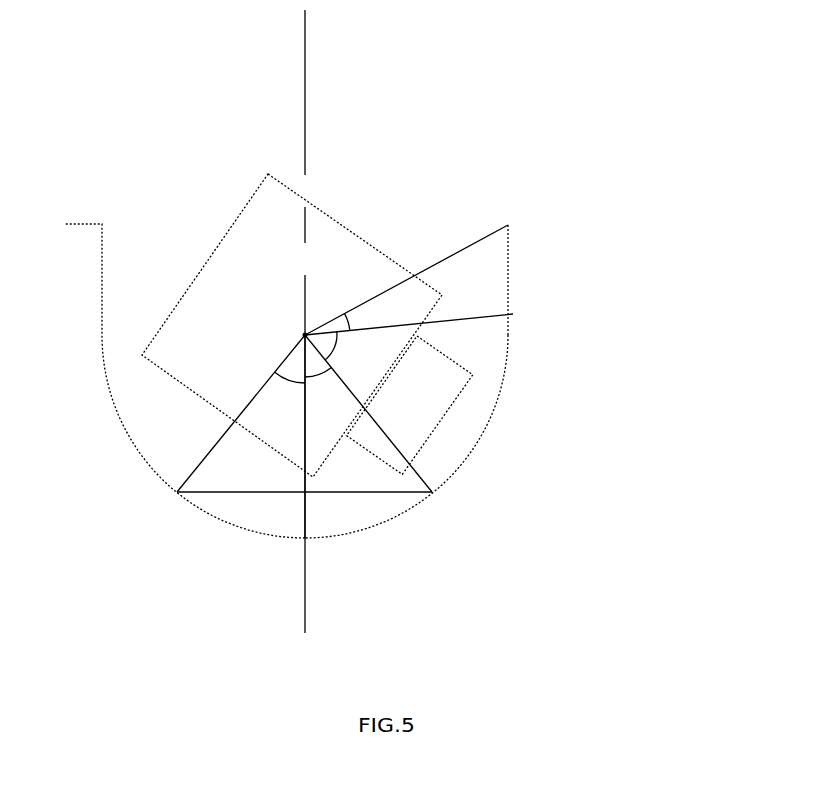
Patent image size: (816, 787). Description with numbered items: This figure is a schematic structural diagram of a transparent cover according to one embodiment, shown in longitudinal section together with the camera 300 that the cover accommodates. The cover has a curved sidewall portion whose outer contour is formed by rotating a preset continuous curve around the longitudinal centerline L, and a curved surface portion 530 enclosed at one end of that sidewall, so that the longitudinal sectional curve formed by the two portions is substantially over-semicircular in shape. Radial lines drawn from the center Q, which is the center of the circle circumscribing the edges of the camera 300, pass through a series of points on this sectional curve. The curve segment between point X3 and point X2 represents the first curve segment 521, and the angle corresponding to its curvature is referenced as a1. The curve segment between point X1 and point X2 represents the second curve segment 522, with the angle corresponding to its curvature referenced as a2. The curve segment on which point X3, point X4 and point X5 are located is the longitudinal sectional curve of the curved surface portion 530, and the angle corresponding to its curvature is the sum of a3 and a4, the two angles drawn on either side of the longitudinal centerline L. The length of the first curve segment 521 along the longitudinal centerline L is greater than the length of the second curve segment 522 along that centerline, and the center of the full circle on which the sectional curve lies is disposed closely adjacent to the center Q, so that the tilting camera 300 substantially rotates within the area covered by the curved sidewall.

The camera 300 is at (360, 237).
The first curve segment 521 is at (510, 268).
The second curve segment 522 is at (497, 400).
The curved surface portion 530 is at (253, 530).
The point X1 is at (508, 225).
The point X2 is at (513, 314).
The point X3 is at (432, 492).
The point X4 is at (307, 538).
The point X5 is at (216, 435).
The center Q is at (305, 335).
The longitudinal centerline L is at (307, 345).
The angle a1 is at (388, 304).
The angle a2 is at (354, 351).
The angle a3 is at (328, 405).
The angle a4 is at (281, 407).